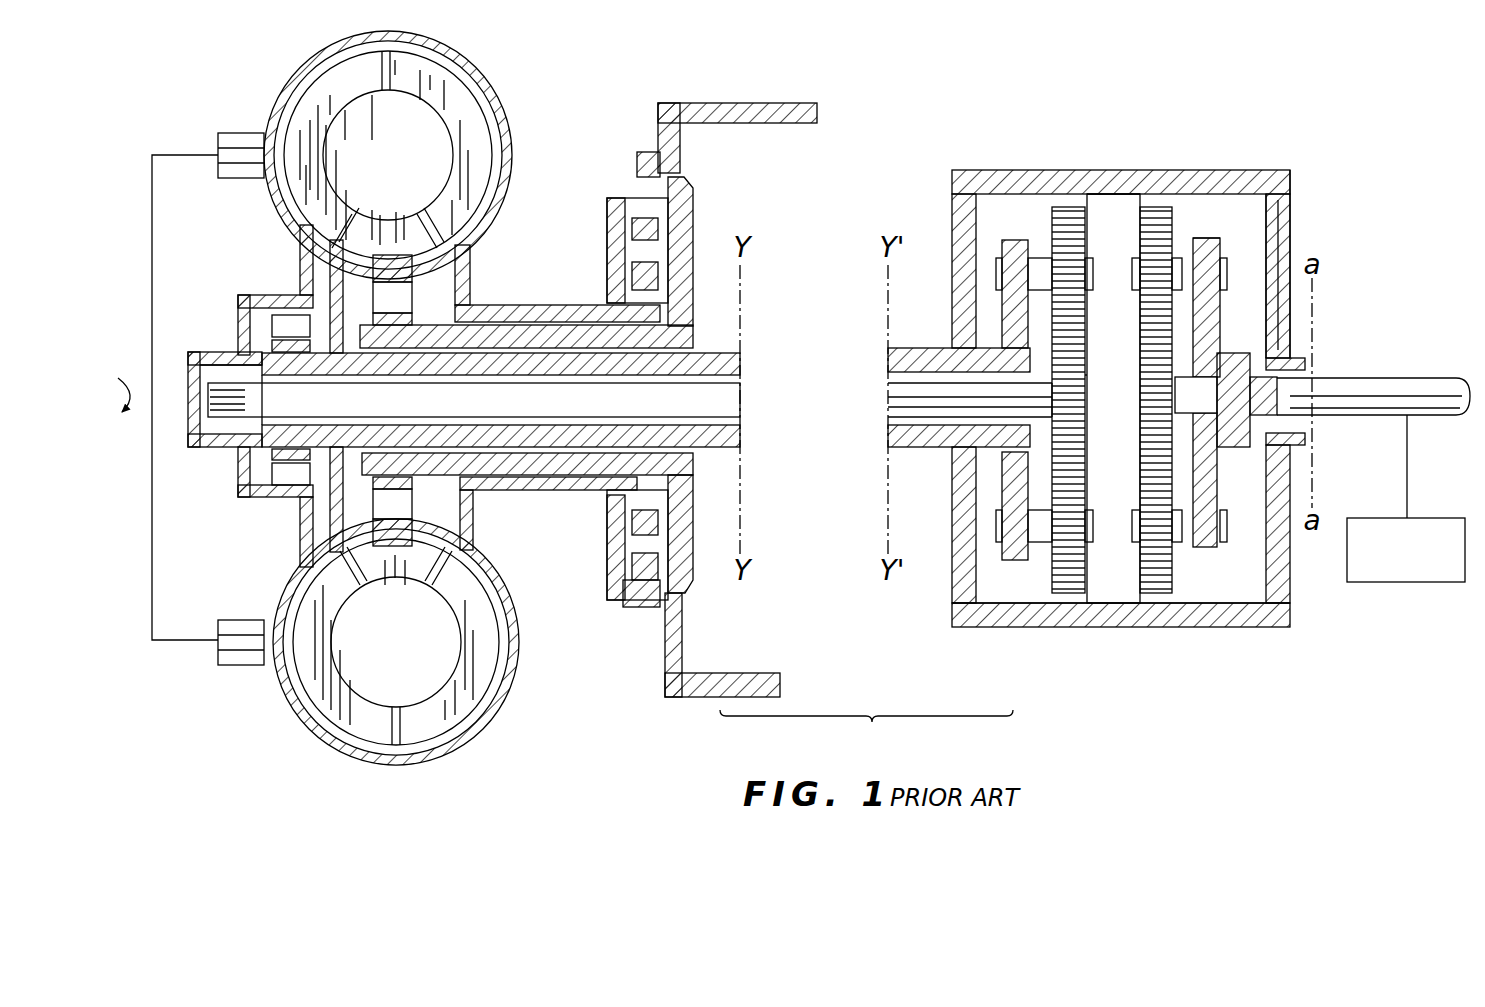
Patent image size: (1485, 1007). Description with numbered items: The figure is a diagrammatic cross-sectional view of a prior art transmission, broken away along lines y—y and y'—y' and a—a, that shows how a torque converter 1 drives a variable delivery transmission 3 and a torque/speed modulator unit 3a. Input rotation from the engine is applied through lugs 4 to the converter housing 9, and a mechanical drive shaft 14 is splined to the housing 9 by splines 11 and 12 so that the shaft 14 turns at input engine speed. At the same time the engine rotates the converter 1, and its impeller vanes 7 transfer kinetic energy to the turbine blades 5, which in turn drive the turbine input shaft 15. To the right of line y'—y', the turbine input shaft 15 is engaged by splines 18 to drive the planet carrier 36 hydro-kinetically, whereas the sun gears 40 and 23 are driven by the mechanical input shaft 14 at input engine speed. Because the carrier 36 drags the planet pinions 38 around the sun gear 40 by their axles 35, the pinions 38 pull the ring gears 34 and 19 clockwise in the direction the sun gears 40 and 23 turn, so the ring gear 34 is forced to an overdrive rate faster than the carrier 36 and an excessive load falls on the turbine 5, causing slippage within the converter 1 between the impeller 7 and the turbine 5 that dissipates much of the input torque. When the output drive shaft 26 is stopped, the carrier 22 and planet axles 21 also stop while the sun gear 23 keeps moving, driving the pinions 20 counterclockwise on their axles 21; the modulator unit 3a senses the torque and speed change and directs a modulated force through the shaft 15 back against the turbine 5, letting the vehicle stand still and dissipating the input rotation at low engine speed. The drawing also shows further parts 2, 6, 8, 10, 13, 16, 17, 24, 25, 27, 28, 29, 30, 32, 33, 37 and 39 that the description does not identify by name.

The converter 1 is at (316, 749).
The lower mounting bracket 2 is at (622, 605).
The variable delivery transmission 3 is at (1160, 629).
The torque/speed modulator unit 3a is at (1072, 629).
The lugs 4 is at (218, 186).
The turbine 5 is at (307, 188).
The hub pole piece 6 is at (392, 212).
The impeller vanes 7 is at (480, 162).
The bearing 8 is at (417, 295).
The converter housing 9 is at (500, 80).
The left housing 10 is at (232, 318).
The splines 11 is at (225, 362).
The splines 12 is at (197, 445).
The upper support plate 13 is at (557, 302).
The mechanical drive shaft 14 is at (259, 430).
The turbine input shaft 15 is at (462, 433).
The lower support plate 16 is at (547, 468).
The upper mounting bracket 17 is at (678, 103).
The splines 18 is at (995, 447).
The ring gear 19 is at (1158, 205).
The pinions 20 is at (1180, 226).
The planet axles 21 is at (1287, 208).
The carrier 22 is at (1227, 300).
The sun gear 23 is at (1210, 342).
The output hub 24 is at (1196, 395).
The output flange 25 is at (1226, 434).
The output drive shaft 26 is at (1378, 380).
The work load 27 is at (1413, 582).
The stem member 28 is at (328, 253).
The shaft shoulder 29 is at (356, 426).
The lower bearing assembly 30 is at (610, 537).
The upper bearing assembly 32 is at (640, 150).
The housing corner 33 is at (1292, 190).
The ring gear 34 is at (1068, 205).
The axles 35 is at (1042, 257).
The planet carrier 36 is at (1017, 548).
The housing top wall 37 is at (1130, 170).
The planet pinions 38 is at (1113, 398).
The shaft spline 39 is at (1070, 380).
The sun gear 40 is at (1087, 355).